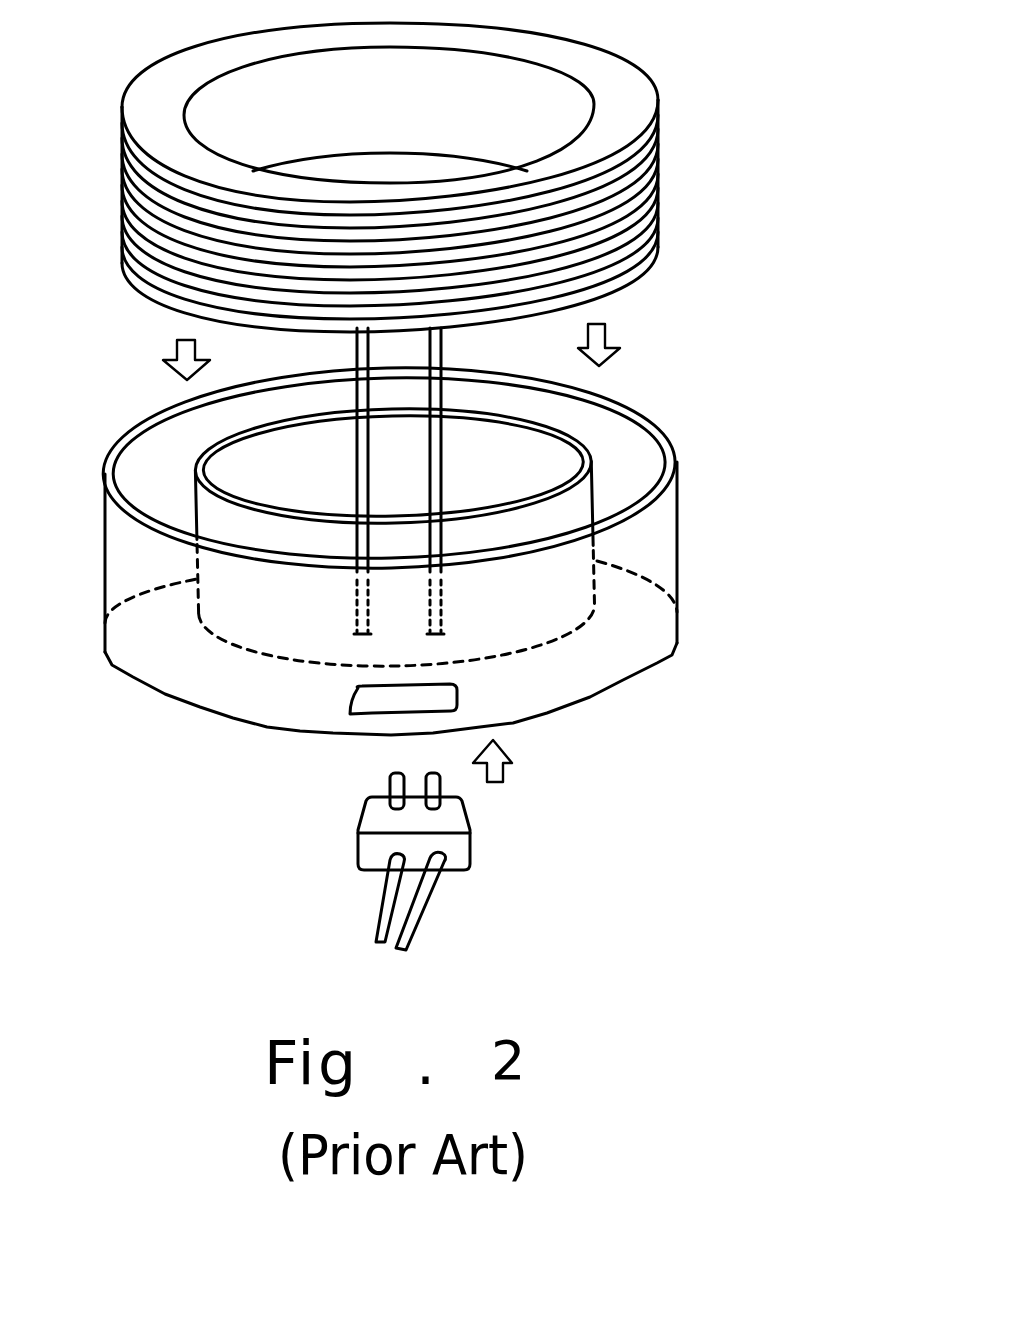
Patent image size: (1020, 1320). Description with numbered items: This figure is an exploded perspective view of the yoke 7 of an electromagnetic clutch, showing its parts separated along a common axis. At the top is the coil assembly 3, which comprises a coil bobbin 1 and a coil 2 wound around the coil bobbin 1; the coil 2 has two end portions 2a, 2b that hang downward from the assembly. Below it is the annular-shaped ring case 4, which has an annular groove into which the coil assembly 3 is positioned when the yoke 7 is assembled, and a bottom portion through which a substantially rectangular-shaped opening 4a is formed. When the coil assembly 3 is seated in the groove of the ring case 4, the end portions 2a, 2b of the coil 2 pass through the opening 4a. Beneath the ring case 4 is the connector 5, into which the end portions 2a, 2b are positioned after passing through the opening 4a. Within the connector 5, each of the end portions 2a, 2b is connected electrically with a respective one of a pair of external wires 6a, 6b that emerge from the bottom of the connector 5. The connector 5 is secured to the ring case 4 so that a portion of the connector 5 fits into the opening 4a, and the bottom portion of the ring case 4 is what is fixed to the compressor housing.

The coil bobbin 1 is at (633, 106).
The coil 2 is at (636, 217).
The coil assembly 3 is at (492, 177).
The end portion of coil 2a is at (357, 482).
The end portion of coil 2b is at (442, 482).
The ring case 4 is at (472, 576).
The opening 4a is at (350, 714).
The connector 5 is at (470, 834).
The external wire 6a is at (380, 882).
The external wire 6b is at (440, 882).
The yoke 7 is at (735, 432).